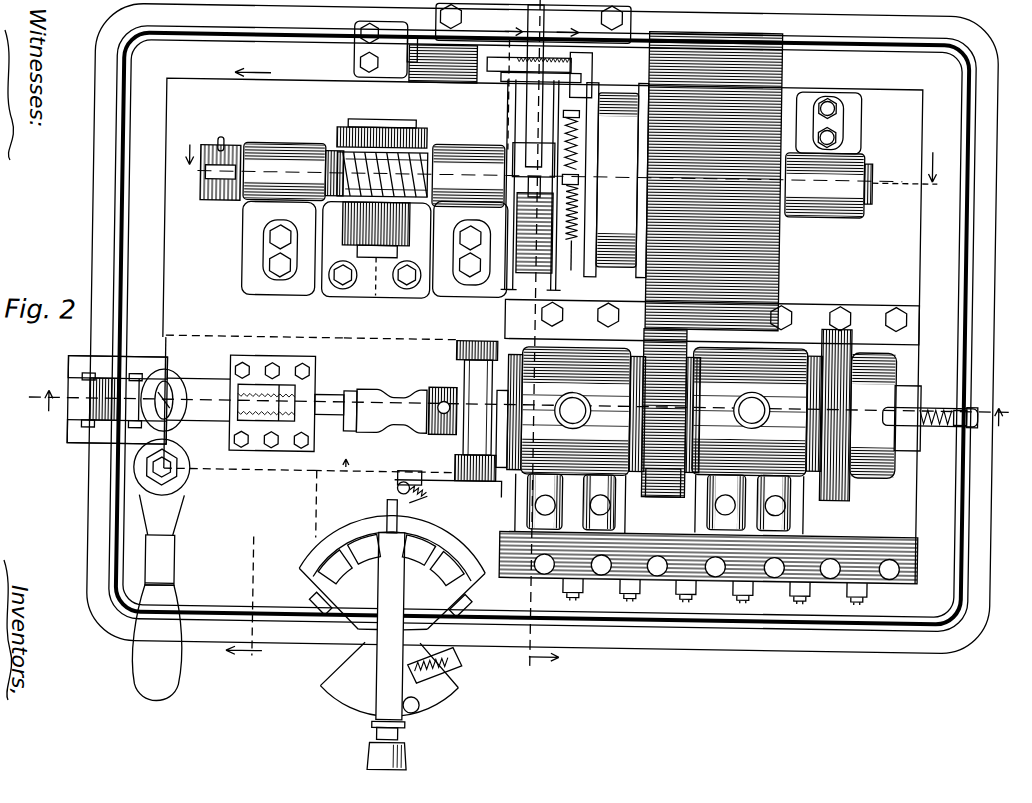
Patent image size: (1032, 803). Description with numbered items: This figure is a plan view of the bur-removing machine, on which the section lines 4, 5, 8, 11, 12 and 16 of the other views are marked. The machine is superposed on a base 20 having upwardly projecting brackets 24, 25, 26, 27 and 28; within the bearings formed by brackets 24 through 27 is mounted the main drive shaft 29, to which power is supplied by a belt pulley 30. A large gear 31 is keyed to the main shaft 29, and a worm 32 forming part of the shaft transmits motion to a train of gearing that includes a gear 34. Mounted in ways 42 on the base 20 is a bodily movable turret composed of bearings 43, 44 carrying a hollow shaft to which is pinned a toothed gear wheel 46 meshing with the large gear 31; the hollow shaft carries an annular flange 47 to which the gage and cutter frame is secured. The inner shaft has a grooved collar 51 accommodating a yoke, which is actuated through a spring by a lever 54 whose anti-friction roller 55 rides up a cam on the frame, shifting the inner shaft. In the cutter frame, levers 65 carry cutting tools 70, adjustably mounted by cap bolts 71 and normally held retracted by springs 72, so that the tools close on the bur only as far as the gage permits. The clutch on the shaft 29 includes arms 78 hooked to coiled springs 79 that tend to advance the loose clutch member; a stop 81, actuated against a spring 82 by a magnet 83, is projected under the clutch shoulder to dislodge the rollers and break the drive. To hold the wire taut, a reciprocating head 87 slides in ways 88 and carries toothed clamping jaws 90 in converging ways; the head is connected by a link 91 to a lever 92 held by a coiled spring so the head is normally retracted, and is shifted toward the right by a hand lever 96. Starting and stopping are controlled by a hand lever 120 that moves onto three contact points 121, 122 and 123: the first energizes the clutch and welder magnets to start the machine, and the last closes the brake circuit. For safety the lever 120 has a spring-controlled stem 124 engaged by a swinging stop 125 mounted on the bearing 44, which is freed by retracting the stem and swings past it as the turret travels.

The section line 4— 4 is at (520, 410).
The section line 5— 5 is at (553, 343).
The section line 8— 8 is at (563, 169).
The section line 11— 11 is at (540, 372).
The section line 12— 12 is at (435, 246).
The section line 16— 16 is at (331, 400).
The base 20 is at (686, 626).
The bearing bracket 24 is at (846, 92).
The bearing bracket 25 is at (472, 297).
The bearing bracket 26 is at (360, 297).
The bearing bracket 27 is at (266, 300).
The bracket 28 is at (352, 78).
The main drive shaft 29 is at (204, 192).
The belt pulley 30 is at (616, 180).
The large gear 31 is at (775, 243).
The worm 32 is at (344, 156).
The gear 34 is at (426, 136).
The ways 42 is at (866, 304).
The turret bearing 43 is at (746, 440).
The turret bearing 44 is at (563, 439).
The toothed gear wheel 46 is at (630, 390).
The annular flange 47 is at (824, 391).
The grooved collar 51 is at (477, 407).
The lever 54 is at (408, 396).
The anti-friction roller 55 is at (362, 392).
The lever 65 is at (948, 405).
The cutting tool 70 is at (990, 424).
The cap bolt 71 is at (986, 408).
The spring 72 is at (936, 400).
The arm 78 is at (560, 242).
The coiled spring 79 is at (578, 132).
The stop 81 is at (497, 60).
The spring 82 is at (576, 70).
The magnet 83 is at (428, 84).
The reciprocating head 87 is at (292, 366).
The ways 88 is at (208, 337).
The clamping jaws 90 is at (258, 390).
The link 91 is at (120, 386).
The lever 92 is at (82, 405).
The hand lever 96 is at (186, 511).
The hand lever 120 is at (390, 650).
The contact point 121 is at (452, 565).
The contact point 122 is at (420, 572).
The contact point 123 is at (338, 578).
The spring-controlled stem 124 is at (392, 503).
The swinging stop 125 is at (422, 506).